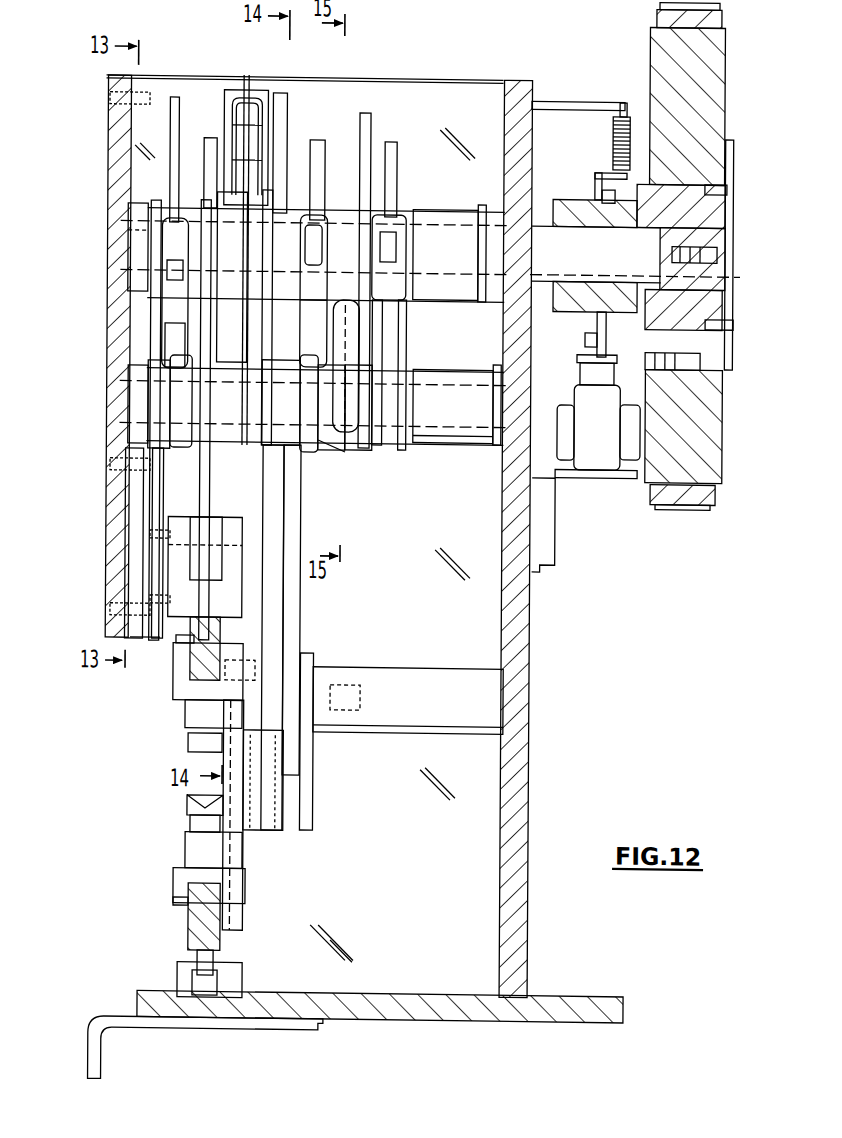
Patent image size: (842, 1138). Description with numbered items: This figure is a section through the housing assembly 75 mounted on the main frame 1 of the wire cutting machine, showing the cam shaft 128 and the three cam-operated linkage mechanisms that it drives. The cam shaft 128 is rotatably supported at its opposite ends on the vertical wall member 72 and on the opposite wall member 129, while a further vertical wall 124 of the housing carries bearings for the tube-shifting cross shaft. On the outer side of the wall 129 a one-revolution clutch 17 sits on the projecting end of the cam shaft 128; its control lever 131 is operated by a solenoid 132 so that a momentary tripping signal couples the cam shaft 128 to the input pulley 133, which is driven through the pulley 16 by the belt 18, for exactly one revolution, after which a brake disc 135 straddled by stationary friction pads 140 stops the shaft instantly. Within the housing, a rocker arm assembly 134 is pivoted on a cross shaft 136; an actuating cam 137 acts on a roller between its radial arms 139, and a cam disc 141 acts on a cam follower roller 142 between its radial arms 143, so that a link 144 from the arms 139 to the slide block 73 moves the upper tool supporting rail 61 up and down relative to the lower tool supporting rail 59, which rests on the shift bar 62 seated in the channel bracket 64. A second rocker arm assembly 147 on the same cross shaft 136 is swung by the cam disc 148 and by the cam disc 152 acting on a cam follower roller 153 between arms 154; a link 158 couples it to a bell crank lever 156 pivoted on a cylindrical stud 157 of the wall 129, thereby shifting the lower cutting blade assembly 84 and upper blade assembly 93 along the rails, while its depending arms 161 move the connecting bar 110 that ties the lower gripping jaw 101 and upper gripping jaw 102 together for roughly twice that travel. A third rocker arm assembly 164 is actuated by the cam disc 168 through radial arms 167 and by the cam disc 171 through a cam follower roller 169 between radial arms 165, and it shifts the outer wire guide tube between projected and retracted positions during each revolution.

The main frame 1 is at (106, 1064).
The pulley 16 is at (717, 485).
The one-revolution clutch 17 is at (737, 126).
The belt 18 is at (691, 500).
The lower tool supporting rail 59 is at (226, 922).
The upper tool supporting rail 61 is at (179, 679).
The shift bar 62 is at (220, 954).
The channel bracket 64 is at (198, 972).
The vertical wall member 72 is at (110, 338).
The slide block 73 is at (230, 598).
The housing assembly 75 is at (106, 144).
The lower cutting blade assembly 84 is at (195, 845).
The upper blade assembly 93 is at (194, 708).
The lower gripping jaw 101 is at (192, 808).
The upper gripping jaw 102 is at (194, 741).
The connecting bar 110 is at (240, 753).
The vertical wall 124 is at (428, 886).
The cam shaft 128 is at (459, 206).
The wall member 129 is at (535, 598).
The control lever 131 is at (598, 340).
The solenoid 132 is at (618, 422).
The input pulley 133 is at (725, 415).
The rocker arm assembly 134 is at (147, 393).
The brake disc 135 is at (245, 92).
The cross shaft 136 is at (470, 427).
The actuating cam 137 is at (171, 128).
The radial arms 139 is at (170, 360).
The friction pads 140 is at (241, 137).
The cam disc 141 is at (208, 135).
The cam follower roller 142 is at (141, 216).
The radial arms 143 is at (167, 296).
The link 144 is at (203, 485).
The rocker arm assembly 147 is at (321, 484).
The cam disc 148 is at (280, 89).
The cam disc 152 is at (319, 136).
The cam follower roller 153 is at (316, 220).
The arms 154 is at (321, 474).
The bell crank lever 156 is at (305, 793).
The cylindrical stud 157 is at (434, 662).
The link 158 is at (292, 596).
The depending arms 161 is at (264, 632).
The rocker arm assembly 164 is at (373, 450).
The radial arms 165 is at (402, 315).
The radial arms 167 is at (369, 447).
The cam disc 168 is at (367, 108).
The cam follower roller 169 is at (391, 220).
The cam disc 171 is at (393, 137).